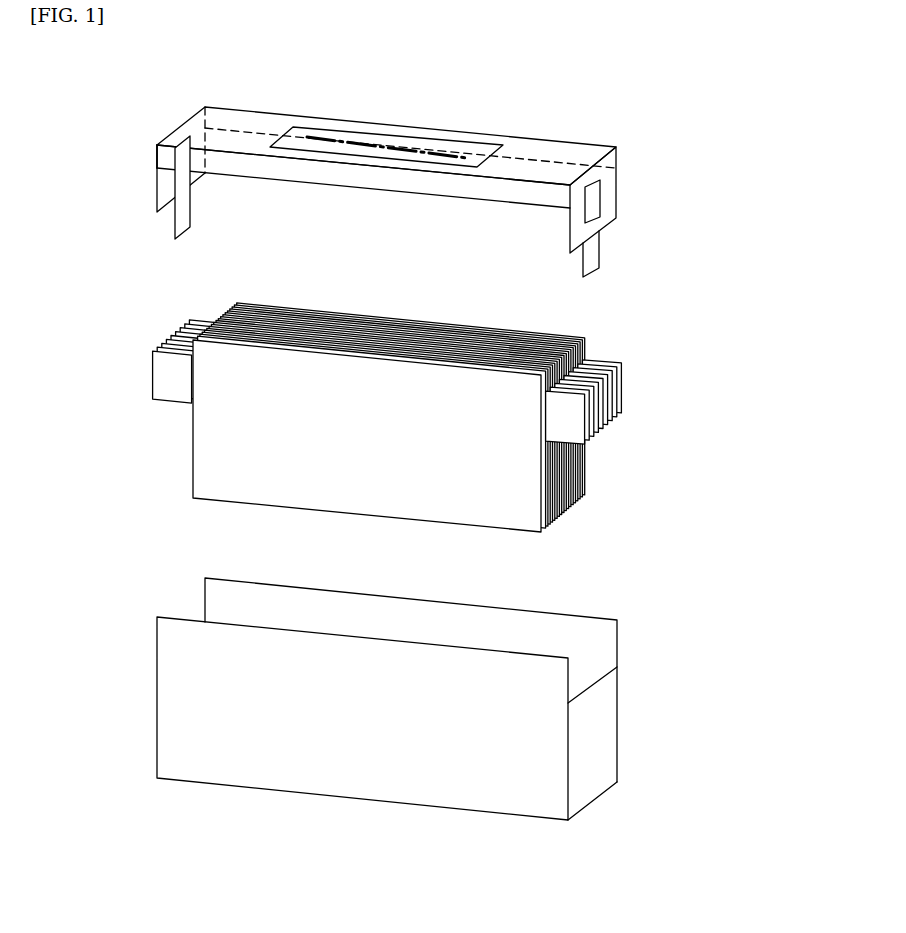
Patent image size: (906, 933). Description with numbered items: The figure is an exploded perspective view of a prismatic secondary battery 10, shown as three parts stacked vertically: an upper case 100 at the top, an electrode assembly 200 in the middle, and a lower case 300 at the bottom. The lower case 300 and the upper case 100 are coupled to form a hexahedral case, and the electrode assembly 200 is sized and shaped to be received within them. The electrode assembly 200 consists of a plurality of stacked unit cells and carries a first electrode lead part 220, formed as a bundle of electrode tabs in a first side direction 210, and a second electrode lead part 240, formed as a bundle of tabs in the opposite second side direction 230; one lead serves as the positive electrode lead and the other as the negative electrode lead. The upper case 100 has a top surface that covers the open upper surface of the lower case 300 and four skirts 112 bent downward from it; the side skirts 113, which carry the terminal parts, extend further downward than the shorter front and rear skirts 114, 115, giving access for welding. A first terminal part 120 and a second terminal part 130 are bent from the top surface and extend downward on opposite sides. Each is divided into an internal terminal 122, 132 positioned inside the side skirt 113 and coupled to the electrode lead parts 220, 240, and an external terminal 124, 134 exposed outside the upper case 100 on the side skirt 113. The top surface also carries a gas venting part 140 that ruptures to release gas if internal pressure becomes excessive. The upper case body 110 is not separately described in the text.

The prismatic secondary battery 10 is at (752, 695).
The upper case 100 is at (652, 182).
The cap body 110 is at (545, 143).
The skirts 112 is at (533, 263).
The side skirts 113 is at (200, 175).
The front skirt 114 is at (353, 175).
The rear skirt 115 is at (523, 152).
The first terminal part 120 is at (83, 138).
The first internal terminal 122 is at (172, 193).
The first external terminal 124 is at (167, 160).
The second terminal part 130 is at (710, 215).
The second internal terminal 132 is at (593, 257).
The second external terminal 134 is at (597, 197).
The gas venting part 140 is at (398, 137).
The electrode assembly 200 is at (652, 397).
The first side direction 210 is at (193, 462).
The first electrode lead part 220 is at (186, 311).
The second side direction 230 is at (543, 490).
The second electrode lead part 240 is at (640, 418).
The lower case 300 is at (632, 683).